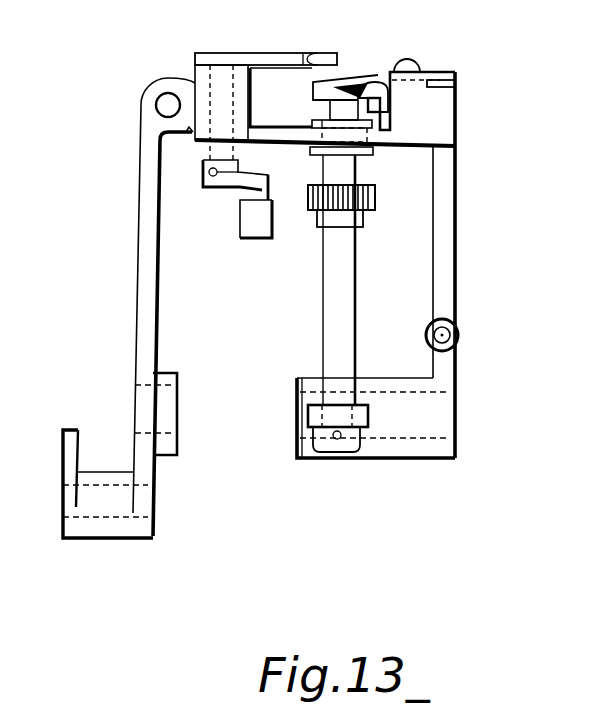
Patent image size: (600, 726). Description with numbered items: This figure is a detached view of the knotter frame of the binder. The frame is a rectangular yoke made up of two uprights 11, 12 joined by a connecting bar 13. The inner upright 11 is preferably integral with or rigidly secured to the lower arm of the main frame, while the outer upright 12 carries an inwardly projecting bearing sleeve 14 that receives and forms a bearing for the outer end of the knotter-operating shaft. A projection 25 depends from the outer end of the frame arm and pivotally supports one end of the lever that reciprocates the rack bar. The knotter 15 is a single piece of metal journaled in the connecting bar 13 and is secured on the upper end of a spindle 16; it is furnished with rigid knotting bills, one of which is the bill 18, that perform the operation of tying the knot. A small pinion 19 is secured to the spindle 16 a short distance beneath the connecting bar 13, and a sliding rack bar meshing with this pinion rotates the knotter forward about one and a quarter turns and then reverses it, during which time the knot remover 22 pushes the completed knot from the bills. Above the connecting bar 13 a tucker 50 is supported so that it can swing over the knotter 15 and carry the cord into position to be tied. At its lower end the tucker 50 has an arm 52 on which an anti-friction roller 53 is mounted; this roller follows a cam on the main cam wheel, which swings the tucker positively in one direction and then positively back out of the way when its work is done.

The inner upright 11 is at (164, 307).
The upright 12 is at (455, 265).
The connecting bar 13 is at (275, 128).
The bearing sleeve 14 is at (376, 418).
The knotter 15 is at (350, 77).
The spindle 16 is at (363, 249).
The knotting bill 18 is at (382, 94).
The pinion 19 is at (310, 193).
The knot remover 22 is at (382, 78).
The projection 25 is at (108, 498).
The tucker 50 is at (266, 49).
The arm 52 is at (257, 169).
The anti-friction roller 53 is at (254, 228).